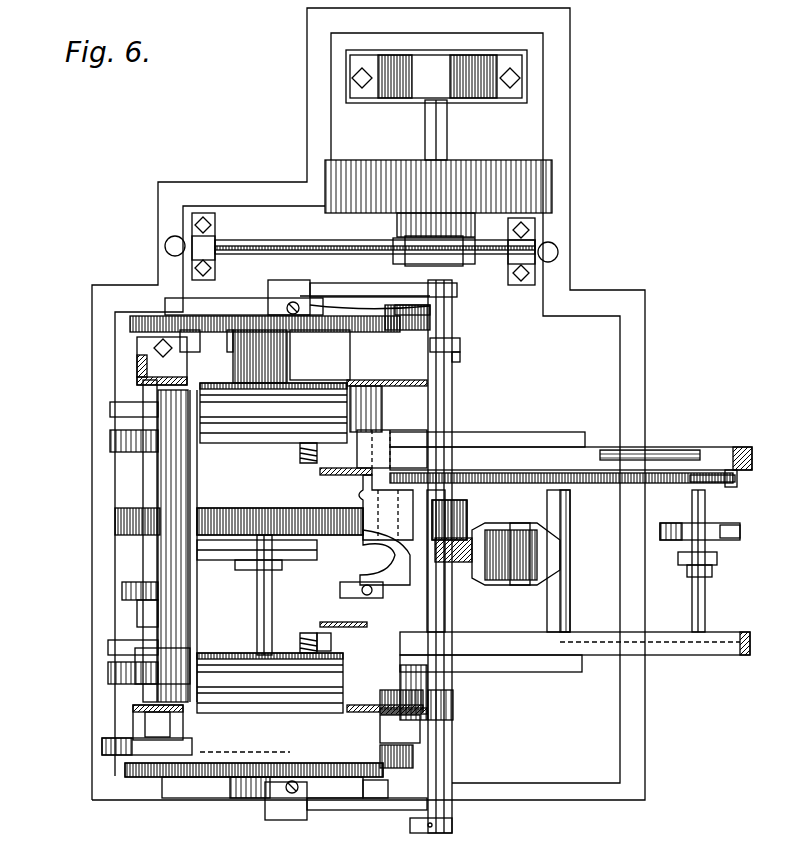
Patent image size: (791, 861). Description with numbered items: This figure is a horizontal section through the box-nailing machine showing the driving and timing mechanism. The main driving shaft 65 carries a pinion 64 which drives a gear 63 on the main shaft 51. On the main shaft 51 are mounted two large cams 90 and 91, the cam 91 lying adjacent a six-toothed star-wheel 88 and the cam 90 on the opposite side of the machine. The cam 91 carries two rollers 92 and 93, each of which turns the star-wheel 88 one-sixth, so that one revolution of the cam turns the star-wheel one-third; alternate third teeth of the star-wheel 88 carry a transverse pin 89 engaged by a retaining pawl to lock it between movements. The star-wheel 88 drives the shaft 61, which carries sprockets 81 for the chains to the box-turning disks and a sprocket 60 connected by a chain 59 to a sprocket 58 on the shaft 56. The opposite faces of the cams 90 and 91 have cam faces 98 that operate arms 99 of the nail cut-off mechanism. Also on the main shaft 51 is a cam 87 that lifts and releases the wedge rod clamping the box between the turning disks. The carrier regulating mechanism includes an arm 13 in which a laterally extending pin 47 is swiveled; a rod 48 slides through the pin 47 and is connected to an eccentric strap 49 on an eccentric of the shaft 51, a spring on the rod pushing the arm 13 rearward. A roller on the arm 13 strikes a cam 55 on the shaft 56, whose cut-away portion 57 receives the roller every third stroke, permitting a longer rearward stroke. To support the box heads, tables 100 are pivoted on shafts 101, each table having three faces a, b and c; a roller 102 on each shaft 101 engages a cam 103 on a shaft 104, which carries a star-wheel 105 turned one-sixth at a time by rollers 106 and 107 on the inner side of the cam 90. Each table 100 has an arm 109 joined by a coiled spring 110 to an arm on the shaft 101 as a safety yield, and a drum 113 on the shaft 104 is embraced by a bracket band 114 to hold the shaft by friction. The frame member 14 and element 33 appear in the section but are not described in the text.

The arm 13 is at (460, 565).
The frame member 14 is at (557, 497).
The collar 33 is at (717, 560).
The laterally extending pin 47 is at (516, 586).
The rod 48 is at (365, 553).
The eccentric strap 49 is at (235, 545).
The shaft 51 is at (274, 568).
The cam 55 is at (740, 532).
The shaft 56 is at (708, 597).
The cut-away portion 57 is at (678, 523).
The sprocket 58 is at (727, 487).
The chain 59 is at (607, 484).
The sprocket 60 is at (413, 470).
The shaft 61 is at (430, 310).
The gear 63 is at (292, 512).
The pinion 64 is at (466, 515).
The main driving shaft 65 is at (455, 414).
The sprockets 81 is at (422, 330).
The cam 87 is at (245, 753).
The star-wheel 88 is at (460, 345).
The transverse pin 89 is at (460, 357).
The cam 90 is at (228, 790).
The cam 91 is at (220, 320).
The roller 92 is at (140, 346).
The roller 93 is at (233, 344).
The cam faces 98 is at (253, 298).
The arms 99 is at (348, 292).
The tables 100 is at (235, 420).
The shaft 101 is at (118, 660).
The roller 102 is at (110, 438).
The cam 103 is at (133, 407).
The shaft 104 is at (150, 469).
The star-wheel 105 is at (102, 748).
The roller 106 is at (372, 780).
The roller 107 is at (258, 790).
The arm 109 is at (318, 632).
The coiled spring 110 is at (300, 452).
The drum 113 is at (140, 616).
The bracket band 114 is at (128, 597).
The face a is at (210, 690).
The face b is at (228, 680).
The face c is at (242, 665).